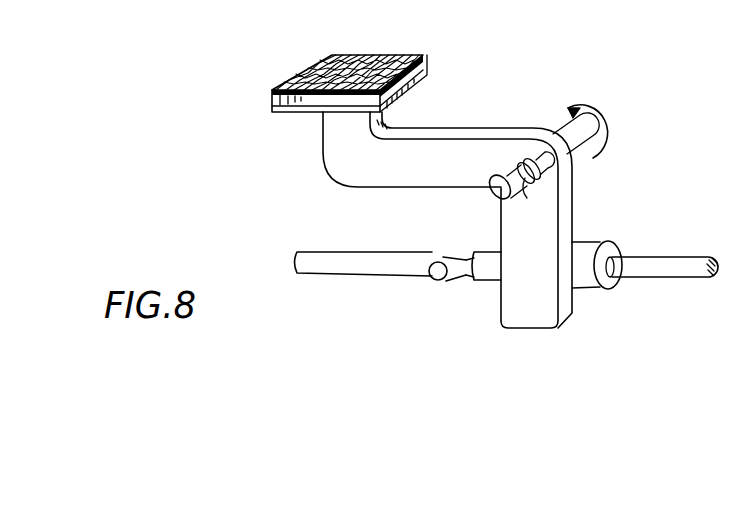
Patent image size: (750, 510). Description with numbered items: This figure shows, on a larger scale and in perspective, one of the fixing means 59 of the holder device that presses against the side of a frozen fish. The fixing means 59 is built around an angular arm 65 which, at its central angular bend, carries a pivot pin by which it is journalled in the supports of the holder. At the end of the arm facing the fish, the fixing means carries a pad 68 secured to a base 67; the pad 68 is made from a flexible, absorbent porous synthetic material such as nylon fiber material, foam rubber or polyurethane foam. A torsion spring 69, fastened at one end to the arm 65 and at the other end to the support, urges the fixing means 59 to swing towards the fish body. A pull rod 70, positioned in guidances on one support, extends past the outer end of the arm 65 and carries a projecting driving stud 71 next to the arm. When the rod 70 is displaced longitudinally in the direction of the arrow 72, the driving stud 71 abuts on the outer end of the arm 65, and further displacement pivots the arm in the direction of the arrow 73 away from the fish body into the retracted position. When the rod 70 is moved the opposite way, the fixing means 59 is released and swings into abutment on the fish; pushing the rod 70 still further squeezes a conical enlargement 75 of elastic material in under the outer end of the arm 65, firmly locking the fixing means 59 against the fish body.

The fixing means 59 is at (307, 163).
The angular arm 65 is at (470, 154).
The base 67 is at (281, 115).
The pad 68 is at (422, 68).
The torsion spring 69 is at (528, 203).
The pull rod 70 is at (330, 262).
The driving stud 71 is at (435, 262).
The arrow 72 is at (667, 241).
The arrow 73 is at (598, 110).
The conical enlargement 75 is at (582, 252).